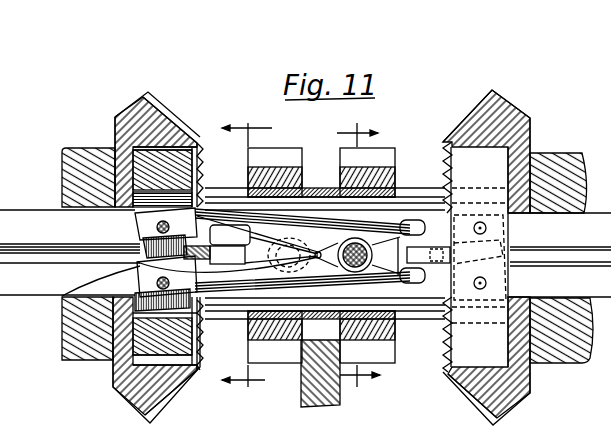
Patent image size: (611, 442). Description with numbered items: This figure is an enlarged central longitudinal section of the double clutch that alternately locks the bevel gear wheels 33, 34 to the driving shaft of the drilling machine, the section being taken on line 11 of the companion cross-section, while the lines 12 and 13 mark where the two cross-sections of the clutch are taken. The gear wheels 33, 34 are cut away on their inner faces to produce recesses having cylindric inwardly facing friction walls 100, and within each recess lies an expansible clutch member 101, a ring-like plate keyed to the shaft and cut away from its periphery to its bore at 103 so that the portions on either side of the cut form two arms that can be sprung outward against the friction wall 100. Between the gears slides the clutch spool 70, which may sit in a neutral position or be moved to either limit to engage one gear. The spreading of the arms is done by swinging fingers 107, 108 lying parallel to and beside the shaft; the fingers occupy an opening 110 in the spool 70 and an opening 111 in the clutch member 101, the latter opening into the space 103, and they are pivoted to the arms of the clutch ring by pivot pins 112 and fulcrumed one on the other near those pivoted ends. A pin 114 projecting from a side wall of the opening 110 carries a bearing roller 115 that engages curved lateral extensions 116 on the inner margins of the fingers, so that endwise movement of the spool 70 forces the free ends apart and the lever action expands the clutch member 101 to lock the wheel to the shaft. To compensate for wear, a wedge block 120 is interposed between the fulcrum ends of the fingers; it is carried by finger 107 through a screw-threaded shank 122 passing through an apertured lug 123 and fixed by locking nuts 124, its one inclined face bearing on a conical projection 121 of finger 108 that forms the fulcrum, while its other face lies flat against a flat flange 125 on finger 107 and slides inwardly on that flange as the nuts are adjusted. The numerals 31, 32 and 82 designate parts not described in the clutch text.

The bevel gear wheel 34 is at (144, 97).
The bevel gear wheel 33 is at (508, 110).
The expansible clutch member 101 is at (62, 150).
The cylindric friction wall 100 is at (148, 143).
The bearing block 32 is at (62, 173).
The cut away portion 103 is at (62, 297).
The wedge block 120 is at (110, 247).
The conical projection 121 is at (78, 266).
The flat flange 125 is at (135, 234).
The pivot pin 112 is at (135, 227).
The opening in clutch member 111 is at (113, 347).
The screw-threaded shank 122 is at (196, 247).
The swinging finger 107 is at (305, 228).
The sliding clutch spool 70 is at (372, 166).
The key block 82 is at (303, 401).
The opening in clutch spool 110 is at (398, 200).
The curved lateral extension 116 is at (320, 253).
The locking nut 124 is at (230, 235).
The apertured lug 123 is at (227, 255).
The swinging finger 108 is at (304, 273).
The bearing roller 115 is at (360, 273).
The spreading pin 114 is at (367, 268).
The section line 12— 12 is at (247, 257).
The section line 13— 13 is at (358, 253).
The frame 31 is at (593, 348).
The section line 11— 11 is at (330, 436).